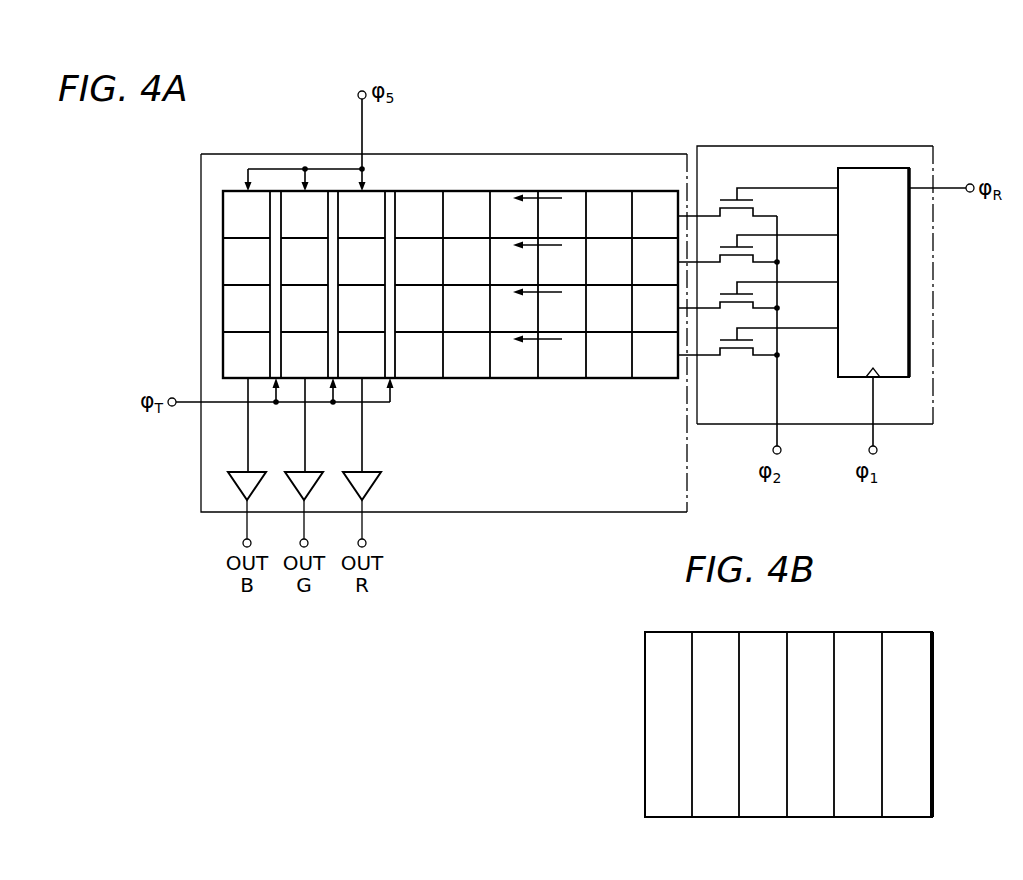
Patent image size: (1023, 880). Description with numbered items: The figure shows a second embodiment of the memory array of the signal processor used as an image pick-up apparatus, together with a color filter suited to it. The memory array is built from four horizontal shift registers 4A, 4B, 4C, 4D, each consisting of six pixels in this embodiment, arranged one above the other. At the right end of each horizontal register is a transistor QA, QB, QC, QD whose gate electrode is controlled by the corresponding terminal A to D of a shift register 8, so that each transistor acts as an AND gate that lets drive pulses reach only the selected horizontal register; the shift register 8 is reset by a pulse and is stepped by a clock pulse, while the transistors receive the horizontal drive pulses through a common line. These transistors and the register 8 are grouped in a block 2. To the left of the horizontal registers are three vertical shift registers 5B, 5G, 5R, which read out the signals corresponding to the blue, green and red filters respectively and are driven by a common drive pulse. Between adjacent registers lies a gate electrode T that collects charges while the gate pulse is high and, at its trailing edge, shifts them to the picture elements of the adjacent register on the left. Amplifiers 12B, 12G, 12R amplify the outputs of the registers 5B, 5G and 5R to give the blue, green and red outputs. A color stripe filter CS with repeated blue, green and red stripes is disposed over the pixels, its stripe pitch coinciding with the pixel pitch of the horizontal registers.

In FIG. 4A, the signal processing / control block 2 is at (852, 145).
In FIG. 4A, the shift register 8 is at (909, 298).
In FIG. 4A, the horizontal shift register 4A is at (692, 363).
In FIG. 4A, the horizontal shift register 4B is at (680, 320).
In FIG. 4A, the horizontal shift register 4C is at (682, 252).
In FIG. 4A, the horizontal shift register 4D is at (603, 191).
In FIG. 4A, the vertical shift register 5B is at (223, 205).
In FIG. 4A, the vertical shift register 5G is at (290, 191).
In FIG. 4A, the vertical shift register 5R is at (348, 191).
In FIG. 4A, the gate electrode T is at (275, 191).
In FIG. 4A, the transistor QA is at (757, 349).
In FIG. 4A, the transistor QB is at (757, 303).
In FIG. 4A, the transistor QC is at (757, 256).
In FIG. 4A, the transistor QD is at (757, 209).
In FIG. 4A, the amplifier 12B is at (258, 471).
In FIG. 4A, the amplifier 12G is at (312, 471).
In FIG. 4A, the amplifier 12R is at (372, 471).
In FIG. 4B, the color stripe filter CS is at (932, 767).